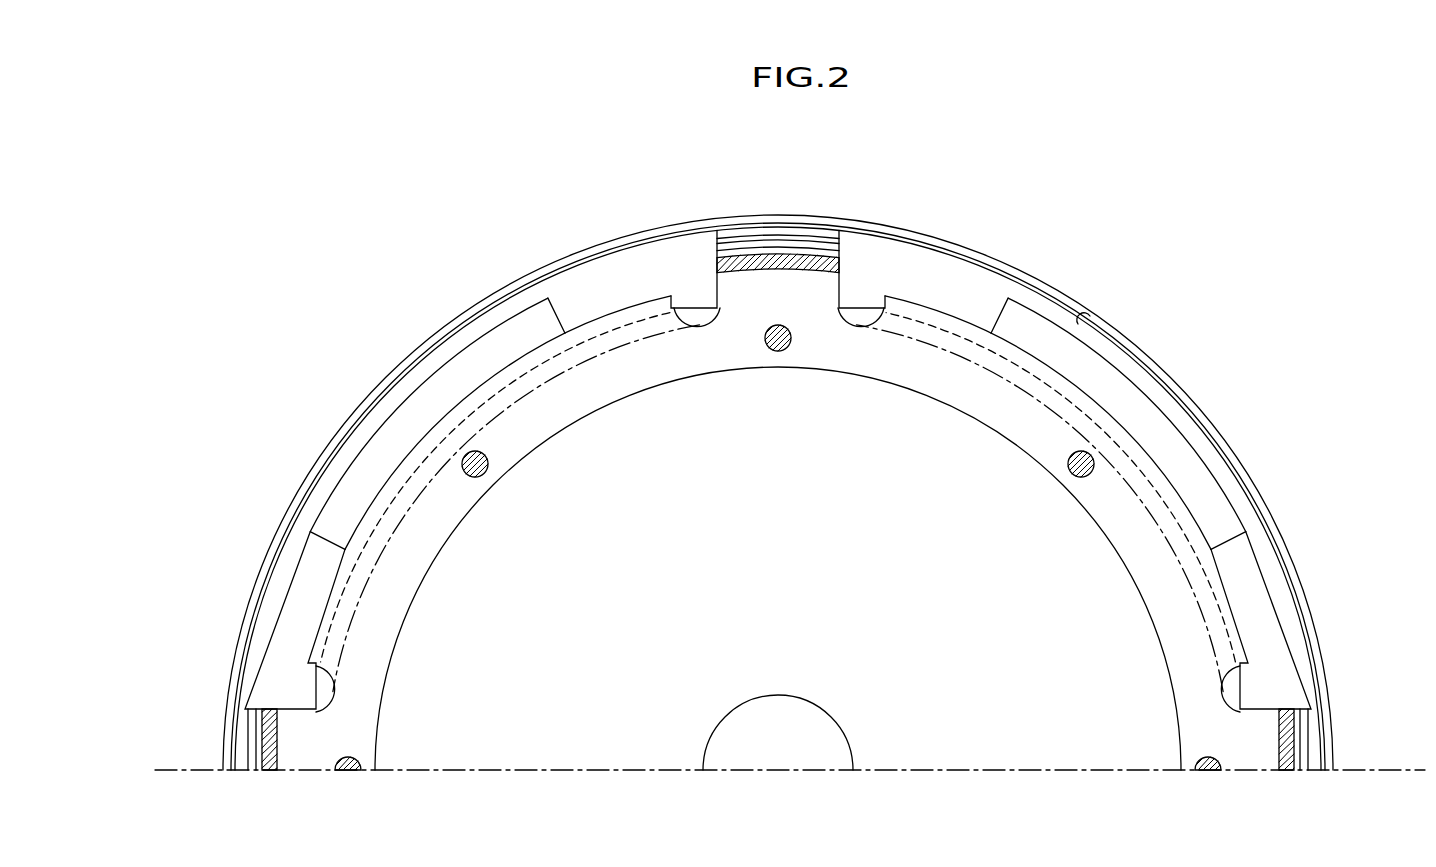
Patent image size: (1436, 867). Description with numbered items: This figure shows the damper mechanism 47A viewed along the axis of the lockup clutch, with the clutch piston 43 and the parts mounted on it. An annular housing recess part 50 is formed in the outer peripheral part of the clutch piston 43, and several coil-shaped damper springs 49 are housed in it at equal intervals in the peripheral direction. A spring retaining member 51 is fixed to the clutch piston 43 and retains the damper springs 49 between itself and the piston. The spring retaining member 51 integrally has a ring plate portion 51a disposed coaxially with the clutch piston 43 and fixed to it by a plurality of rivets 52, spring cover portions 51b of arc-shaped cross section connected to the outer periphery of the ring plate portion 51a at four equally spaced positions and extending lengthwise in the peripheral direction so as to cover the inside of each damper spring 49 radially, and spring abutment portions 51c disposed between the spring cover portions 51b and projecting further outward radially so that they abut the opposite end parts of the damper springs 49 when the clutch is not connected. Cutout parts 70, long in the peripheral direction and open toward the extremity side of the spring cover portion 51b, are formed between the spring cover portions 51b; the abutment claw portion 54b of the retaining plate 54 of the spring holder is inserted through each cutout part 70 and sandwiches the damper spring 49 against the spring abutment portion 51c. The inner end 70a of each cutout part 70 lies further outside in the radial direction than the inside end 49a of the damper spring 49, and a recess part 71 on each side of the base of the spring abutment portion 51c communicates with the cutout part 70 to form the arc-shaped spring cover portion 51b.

The clutch piston 43 is at (900, 220).
The damper mechanism 47A is at (786, 448).
The damper spring 49 is at (635, 262).
The inside end of the damper spring 49a is at (418, 510).
The housing recess part 50 is at (1085, 319).
The spring retaining member 51 is at (778, 568).
The ring plate portion 51a is at (555, 424).
The spring cover portion 51b is at (418, 382).
The spring abutment portion 51c is at (775, 238).
The rivet 52 is at (767, 349).
The retaining plate 54 is at (497, 403).
The abutment claw portion 54b is at (808, 257).
The cutout part 70 is at (769, 462).
The inner end of the cutout part 70a is at (325, 598).
The recess part 71 is at (700, 337).